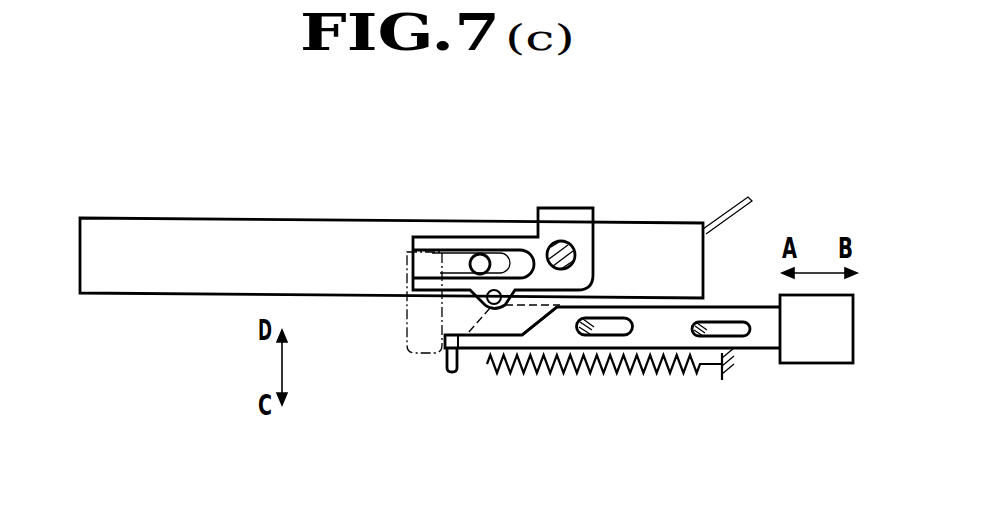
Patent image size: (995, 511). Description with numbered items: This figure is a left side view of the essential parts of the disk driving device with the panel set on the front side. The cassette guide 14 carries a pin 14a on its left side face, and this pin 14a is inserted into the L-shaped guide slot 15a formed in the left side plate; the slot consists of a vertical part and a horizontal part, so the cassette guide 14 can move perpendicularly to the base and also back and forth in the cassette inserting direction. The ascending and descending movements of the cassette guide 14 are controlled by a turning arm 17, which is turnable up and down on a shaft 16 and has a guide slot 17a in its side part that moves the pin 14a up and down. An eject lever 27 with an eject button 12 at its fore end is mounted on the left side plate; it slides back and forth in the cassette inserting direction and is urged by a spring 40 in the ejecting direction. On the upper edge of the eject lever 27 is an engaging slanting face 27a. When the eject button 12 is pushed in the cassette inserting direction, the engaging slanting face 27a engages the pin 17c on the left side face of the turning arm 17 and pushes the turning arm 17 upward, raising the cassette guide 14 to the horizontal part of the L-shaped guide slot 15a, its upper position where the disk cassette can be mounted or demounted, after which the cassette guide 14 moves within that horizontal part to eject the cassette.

The eject button 12 is at (822, 343).
The cassette guide 14 is at (135, 247).
The pin 14a is at (482, 253).
The L-shaped guide slot 15a is at (403, 308).
The shaft 16 is at (575, 253).
The turning arm 17 is at (570, 207).
The guide slot 17a is at (405, 260).
The pin 17c is at (494, 304).
The eject lever 27 is at (653, 325).
The engaging slanting face 27a is at (543, 320).
The spring 40 is at (595, 373).